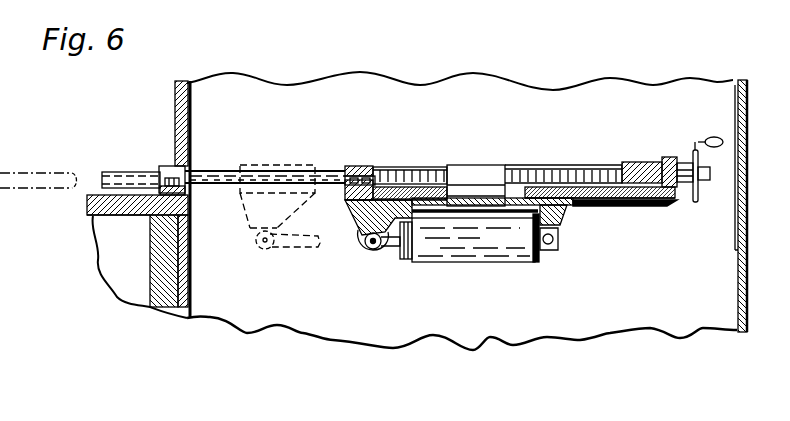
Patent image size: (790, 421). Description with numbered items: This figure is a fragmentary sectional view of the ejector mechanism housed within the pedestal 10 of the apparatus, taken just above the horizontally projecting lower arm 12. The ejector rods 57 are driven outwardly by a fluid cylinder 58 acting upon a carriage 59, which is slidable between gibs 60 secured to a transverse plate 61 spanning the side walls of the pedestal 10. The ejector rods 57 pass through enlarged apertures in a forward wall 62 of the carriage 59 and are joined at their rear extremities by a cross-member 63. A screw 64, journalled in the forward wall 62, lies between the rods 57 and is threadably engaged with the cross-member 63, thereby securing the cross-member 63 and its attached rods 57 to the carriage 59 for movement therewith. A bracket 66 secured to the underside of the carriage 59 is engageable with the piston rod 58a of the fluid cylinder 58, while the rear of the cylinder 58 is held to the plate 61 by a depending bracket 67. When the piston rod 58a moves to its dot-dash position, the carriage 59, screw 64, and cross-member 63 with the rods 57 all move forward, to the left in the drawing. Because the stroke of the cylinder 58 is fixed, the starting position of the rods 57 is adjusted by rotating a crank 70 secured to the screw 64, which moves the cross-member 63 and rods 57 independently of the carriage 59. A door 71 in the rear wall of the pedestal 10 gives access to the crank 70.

The pedestal 10 is at (326, 340).
The lower arm 12 is at (96, 258).
The ejector rods 57 is at (118, 186).
The fluid cylinder 58 is at (500, 240).
The piston rod 58a is at (375, 250).
The carriage 59 is at (535, 163).
The gibs 60 is at (481, 187).
The transverse plate 61 is at (572, 204).
The forward wall 62 is at (349, 165).
The cross-member 63 is at (636, 162).
The screw 64 is at (416, 167).
The bracket 66 is at (360, 226).
The depending bracket 67 is at (564, 226).
The crank 70 is at (713, 136).
The door 71 is at (735, 222).